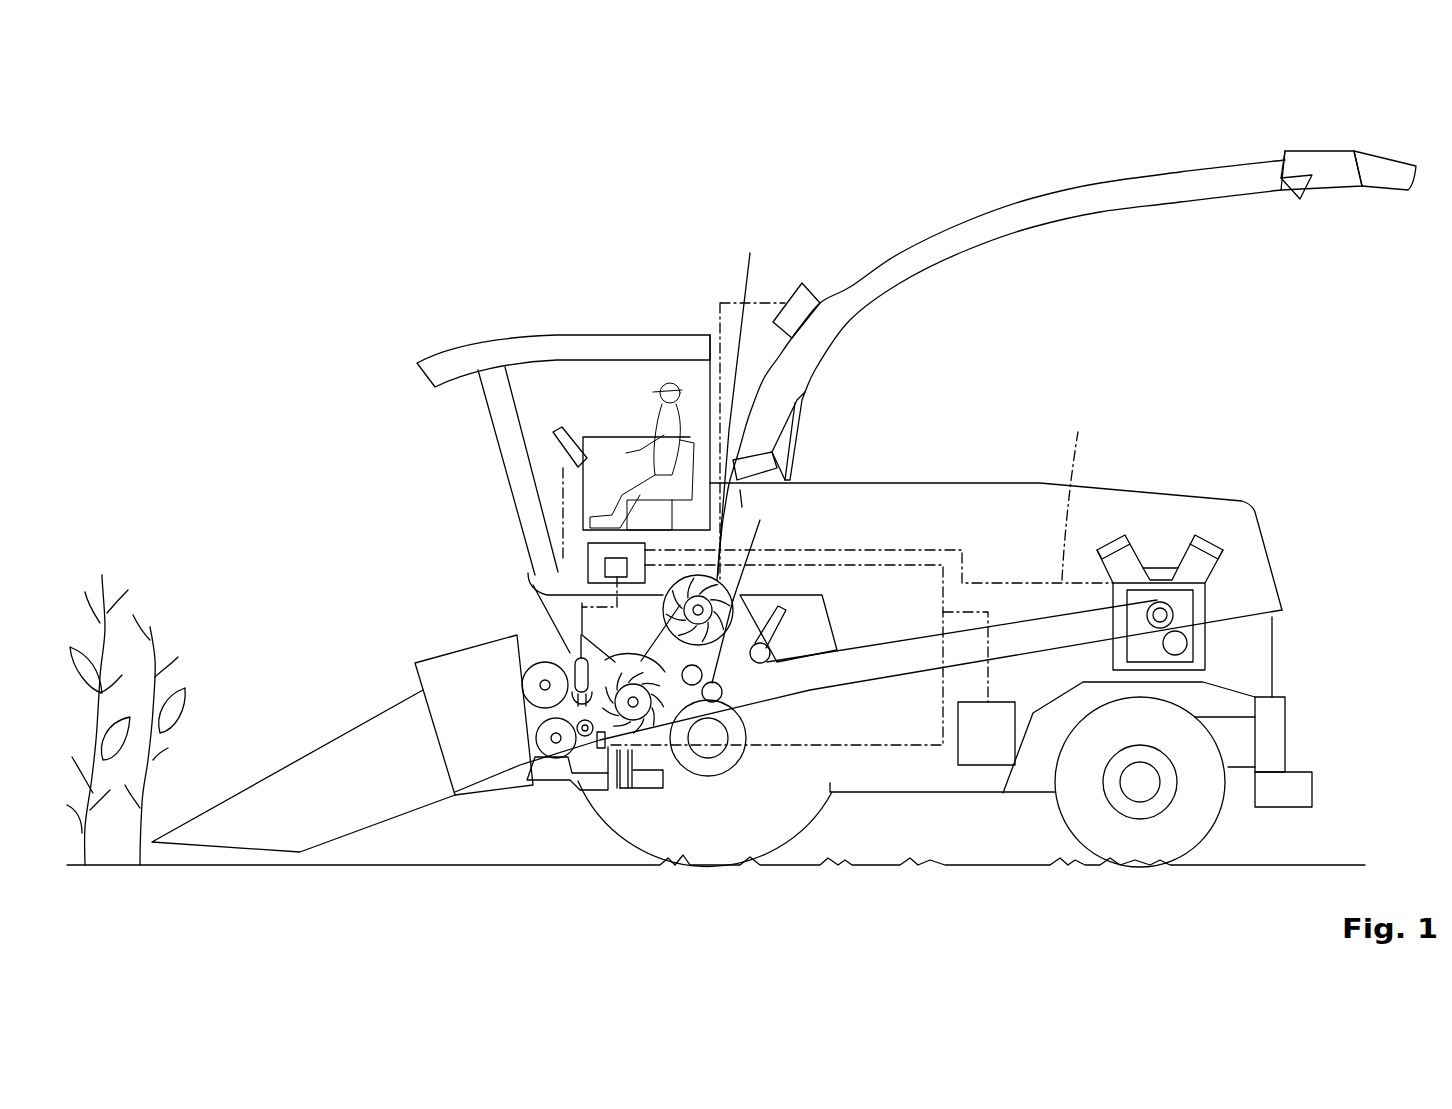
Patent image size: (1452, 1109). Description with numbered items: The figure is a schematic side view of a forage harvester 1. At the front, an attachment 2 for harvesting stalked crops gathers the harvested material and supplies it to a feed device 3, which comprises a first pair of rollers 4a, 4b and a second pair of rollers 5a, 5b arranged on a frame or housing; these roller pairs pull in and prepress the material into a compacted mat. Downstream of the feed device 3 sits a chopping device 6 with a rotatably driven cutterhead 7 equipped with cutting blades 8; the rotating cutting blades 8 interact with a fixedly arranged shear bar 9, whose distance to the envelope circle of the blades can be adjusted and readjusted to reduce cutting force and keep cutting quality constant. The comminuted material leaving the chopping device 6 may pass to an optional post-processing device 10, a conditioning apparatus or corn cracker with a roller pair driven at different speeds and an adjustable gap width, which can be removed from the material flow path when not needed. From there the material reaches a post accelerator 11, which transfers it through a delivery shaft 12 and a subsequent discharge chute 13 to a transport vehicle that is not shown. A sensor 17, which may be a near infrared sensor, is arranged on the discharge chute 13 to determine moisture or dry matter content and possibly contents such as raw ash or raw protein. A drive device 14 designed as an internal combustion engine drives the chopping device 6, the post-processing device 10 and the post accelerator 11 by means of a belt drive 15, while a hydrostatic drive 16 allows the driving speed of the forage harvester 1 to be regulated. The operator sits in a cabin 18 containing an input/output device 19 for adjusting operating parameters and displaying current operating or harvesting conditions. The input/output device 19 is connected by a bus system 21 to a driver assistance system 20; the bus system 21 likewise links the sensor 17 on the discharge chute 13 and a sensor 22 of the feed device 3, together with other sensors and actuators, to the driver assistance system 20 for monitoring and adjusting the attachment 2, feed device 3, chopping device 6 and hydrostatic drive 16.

The forage harvester 1 is at (287, 192).
The attachment 2 is at (300, 795).
The feed device 3 is at (567, 793).
The first pair of rollers (roller 4a) 4a is at (523, 680).
The first pair of rollers (roller 4b) 4b is at (556, 740).
The second pair of rollers (roller 5a) 5a is at (570, 690).
The second pair of rollers (roller 5b) 5b is at (585, 735).
The chopping device 6 is at (648, 752).
The cutterhead 7 is at (717, 753).
The cutting blades 8 is at (637, 710).
The shear bar 9 is at (615, 747).
The post-processing device 10 is at (745, 705).
The post accelerator 11 is at (728, 590).
The delivery shaft 12 is at (744, 402).
The discharge chute 13 is at (1003, 213).
The drive device 14 is at (1203, 572).
The belt drive 15 is at (1018, 615).
The hydrostatic drive 16 is at (992, 745).
The sensor 17 is at (815, 298).
The cabin 18 is at (452, 350).
The input/output device 19 is at (560, 428).
The driver assistance system 20 is at (587, 548).
The bus system 21 is at (553, 465).
The sensor 22 is at (580, 652).